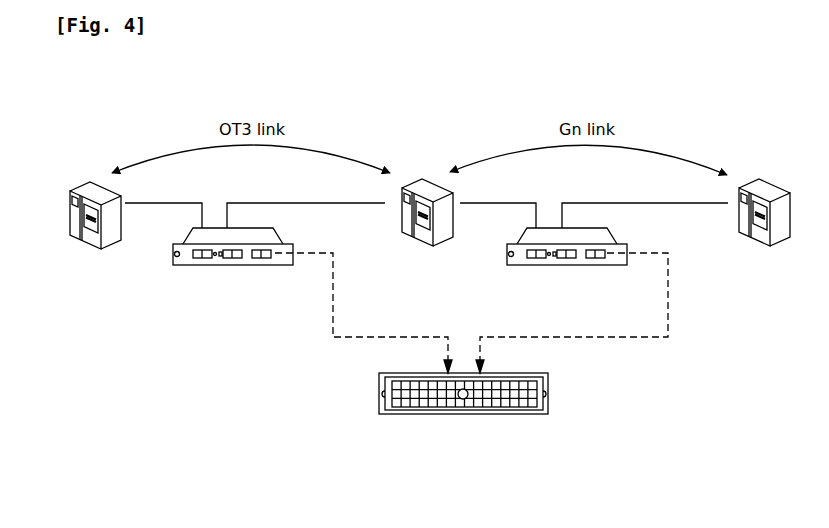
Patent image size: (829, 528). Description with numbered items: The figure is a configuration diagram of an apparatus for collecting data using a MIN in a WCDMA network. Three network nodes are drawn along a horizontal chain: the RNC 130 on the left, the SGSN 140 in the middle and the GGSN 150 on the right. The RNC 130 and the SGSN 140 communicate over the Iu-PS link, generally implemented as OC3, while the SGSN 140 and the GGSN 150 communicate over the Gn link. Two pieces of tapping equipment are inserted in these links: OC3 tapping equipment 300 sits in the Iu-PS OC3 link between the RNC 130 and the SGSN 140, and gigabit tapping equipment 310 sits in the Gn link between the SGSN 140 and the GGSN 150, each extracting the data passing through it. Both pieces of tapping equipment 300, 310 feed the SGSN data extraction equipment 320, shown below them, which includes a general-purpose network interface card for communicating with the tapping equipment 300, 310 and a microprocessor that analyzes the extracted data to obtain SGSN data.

The RNC 130 is at (91, 240).
The SGSN 140 is at (408, 178).
The GGSN 150 is at (745, 186).
The tapping equipment 300 is at (230, 265).
The tapping equipment 310 is at (566, 265).
The SGSN data extraction equipment 320 is at (461, 414).